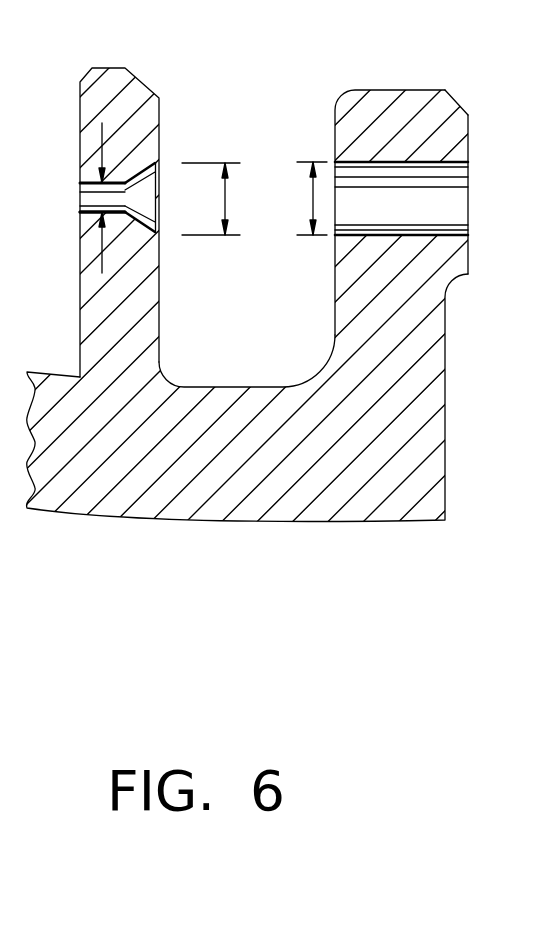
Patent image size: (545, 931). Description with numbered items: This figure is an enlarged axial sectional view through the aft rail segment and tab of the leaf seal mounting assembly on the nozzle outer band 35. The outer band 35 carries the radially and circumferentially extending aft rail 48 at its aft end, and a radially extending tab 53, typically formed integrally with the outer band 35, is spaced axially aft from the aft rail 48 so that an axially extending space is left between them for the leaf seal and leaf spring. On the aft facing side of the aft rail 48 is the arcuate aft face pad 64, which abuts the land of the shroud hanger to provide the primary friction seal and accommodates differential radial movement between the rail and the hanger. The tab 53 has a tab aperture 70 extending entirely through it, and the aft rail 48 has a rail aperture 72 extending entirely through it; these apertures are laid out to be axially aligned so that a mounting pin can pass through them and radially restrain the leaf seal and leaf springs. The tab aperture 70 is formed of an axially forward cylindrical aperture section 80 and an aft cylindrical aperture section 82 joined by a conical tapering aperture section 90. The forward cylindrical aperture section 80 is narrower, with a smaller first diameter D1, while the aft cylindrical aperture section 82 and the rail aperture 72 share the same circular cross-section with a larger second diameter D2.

The nozzle outer band 35 is at (213, 523).
The aft rail 48 is at (380, 90).
The tab 53 is at (79, 108).
The aft face pad 64 is at (470, 136).
The tab aperture 70 is at (92, 198).
The rail aperture 72 is at (450, 232).
The forward cylindrical aperture section 80 is at (90, 211).
The aft cylindrical aperture section 82 is at (155, 172).
The conical tapering aperture section 90 is at (143, 210).
The first diameter D1 is at (100, 269).
The second diameter D2 is at (313, 198).